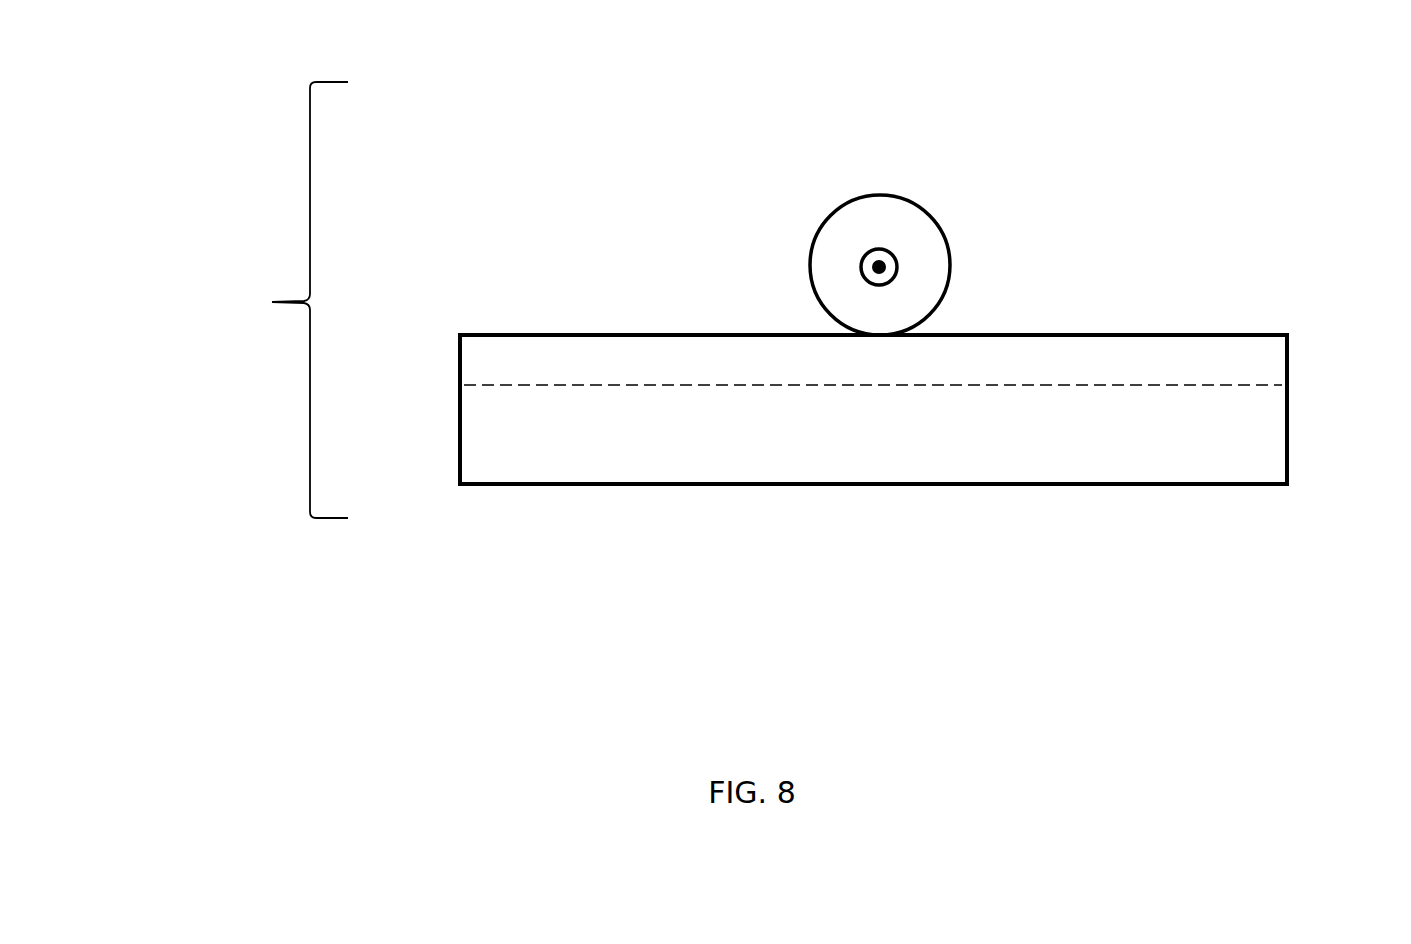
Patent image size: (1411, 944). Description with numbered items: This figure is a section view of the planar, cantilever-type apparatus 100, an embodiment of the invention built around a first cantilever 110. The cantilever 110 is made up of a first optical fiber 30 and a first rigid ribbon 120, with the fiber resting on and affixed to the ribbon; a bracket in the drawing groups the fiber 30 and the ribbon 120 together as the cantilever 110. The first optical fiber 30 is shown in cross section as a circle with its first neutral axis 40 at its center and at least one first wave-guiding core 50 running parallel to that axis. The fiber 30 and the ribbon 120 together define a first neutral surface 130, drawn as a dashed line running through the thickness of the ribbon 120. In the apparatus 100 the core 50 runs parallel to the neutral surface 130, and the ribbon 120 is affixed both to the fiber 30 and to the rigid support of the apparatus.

The planar, cantilever-type apparatus 100 is at (988, 198).
The first optical fiber 30 is at (828, 218).
The first neutral axis 40 is at (886, 262).
The first wave-guiding core 50 is at (861, 267).
The first cantilever 110 is at (268, 308).
The first rigid ribbon 120 is at (723, 333).
The first neutral surface 130 is at (1213, 388).